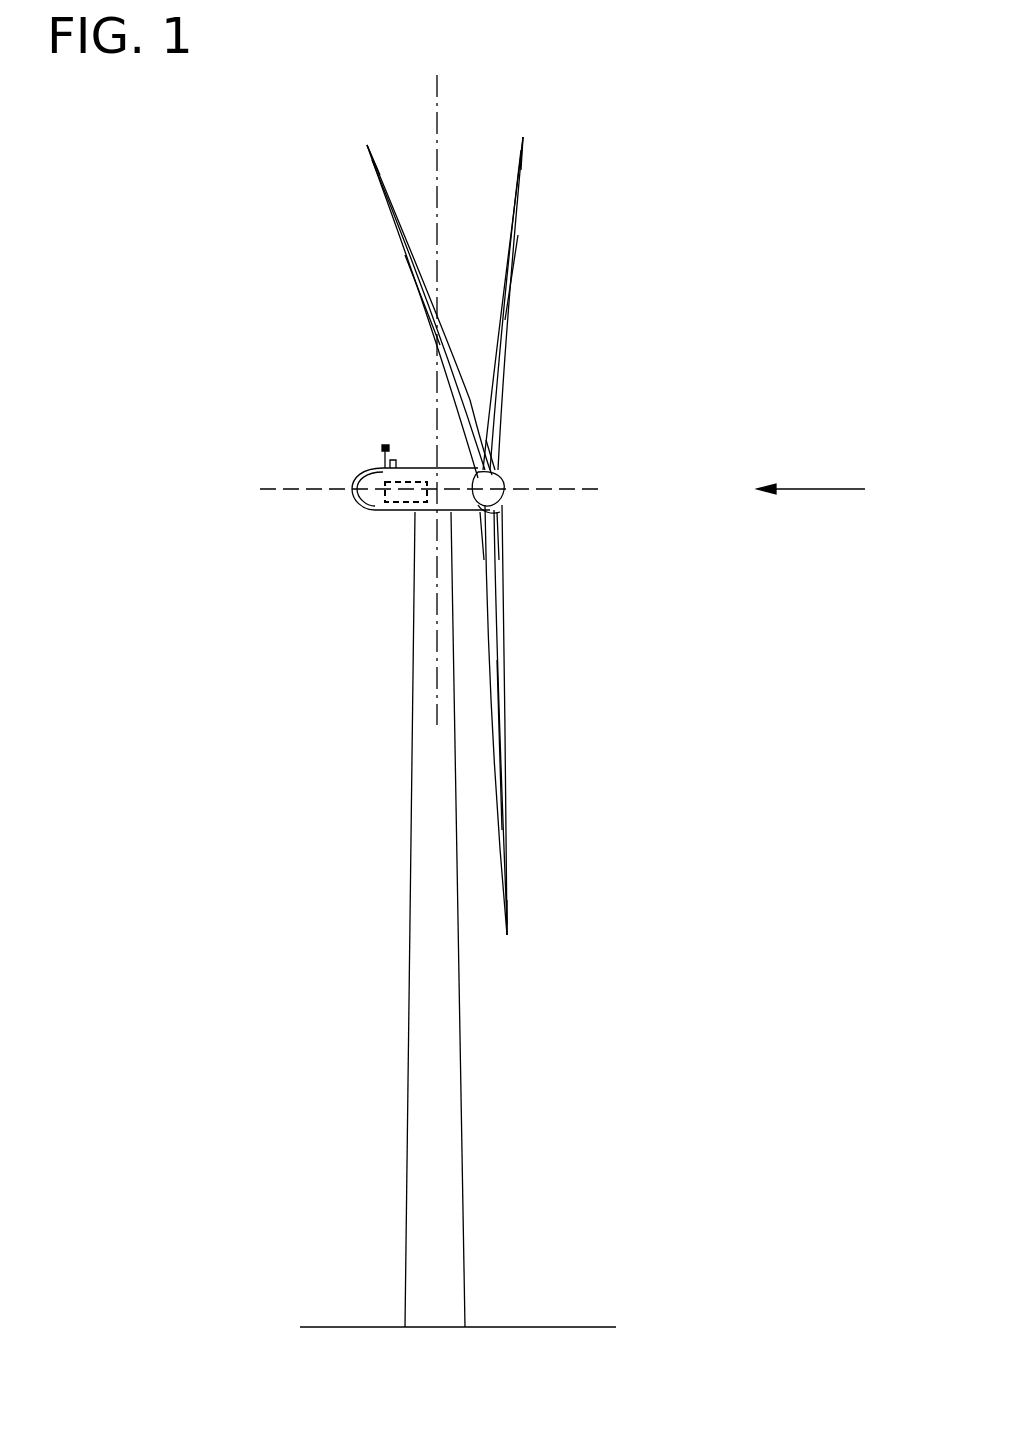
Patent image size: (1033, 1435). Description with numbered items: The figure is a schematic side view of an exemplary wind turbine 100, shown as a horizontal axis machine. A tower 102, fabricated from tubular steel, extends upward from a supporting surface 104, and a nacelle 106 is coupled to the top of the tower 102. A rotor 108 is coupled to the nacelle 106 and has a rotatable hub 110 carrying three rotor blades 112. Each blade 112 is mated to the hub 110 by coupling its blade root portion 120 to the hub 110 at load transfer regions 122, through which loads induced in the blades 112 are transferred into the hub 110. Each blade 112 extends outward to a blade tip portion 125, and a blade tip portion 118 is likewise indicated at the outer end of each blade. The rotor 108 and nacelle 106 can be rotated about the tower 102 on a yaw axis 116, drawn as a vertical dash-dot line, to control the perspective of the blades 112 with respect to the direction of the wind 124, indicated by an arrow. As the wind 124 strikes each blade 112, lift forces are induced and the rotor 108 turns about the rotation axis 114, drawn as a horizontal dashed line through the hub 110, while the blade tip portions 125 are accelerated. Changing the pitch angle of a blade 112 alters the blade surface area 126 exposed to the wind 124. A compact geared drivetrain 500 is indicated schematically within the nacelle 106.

The wind turbine 100 is at (180, 268).
The tower 102 is at (410, 1082).
The supporting surface 104 is at (362, 1327).
The nacelle 106 is at (385, 513).
The rotor 108 is at (522, 386).
The rotatable hub 110 is at (500, 482).
The rotor blades 112 is at (432, 330).
The rotation axis 114 is at (577, 490).
The yaw axis 116 is at (487, 68).
The blade tip portion 118 is at (372, 172).
The blade root portion 120 is at (497, 563).
The load transfer regions 122 is at (495, 505).
The wind 124 is at (833, 489).
The blade tip portion 125 is at (410, 265).
The blade surface area 126 is at (500, 440).
The compact geared drivetrain 500 is at (372, 468).